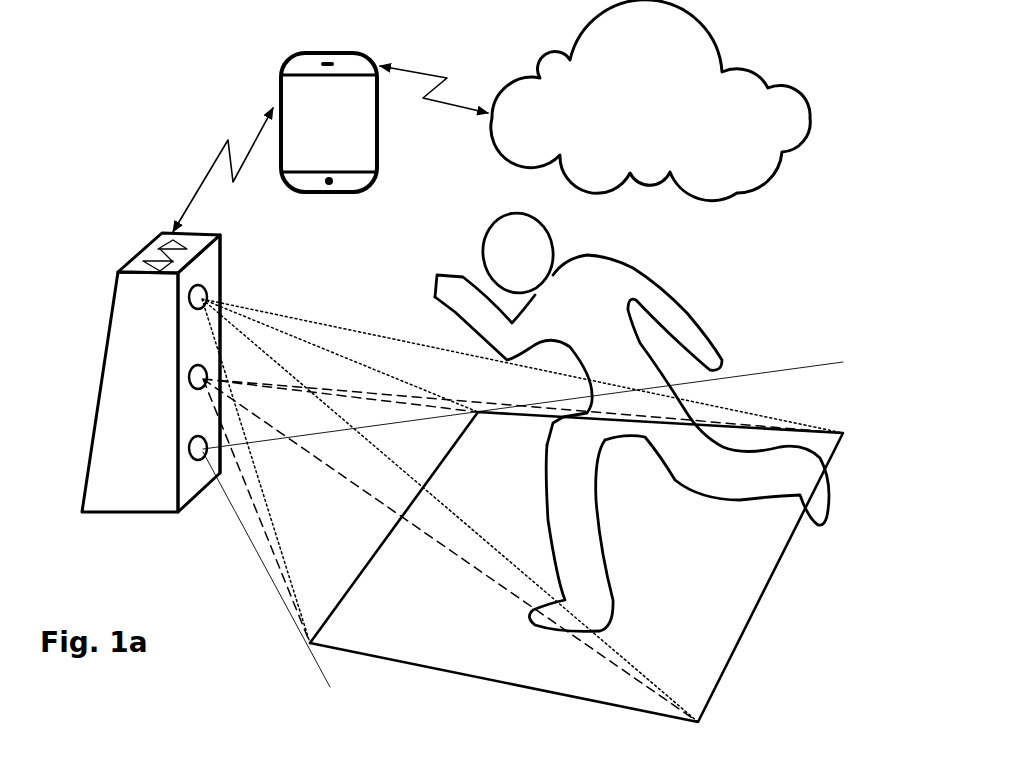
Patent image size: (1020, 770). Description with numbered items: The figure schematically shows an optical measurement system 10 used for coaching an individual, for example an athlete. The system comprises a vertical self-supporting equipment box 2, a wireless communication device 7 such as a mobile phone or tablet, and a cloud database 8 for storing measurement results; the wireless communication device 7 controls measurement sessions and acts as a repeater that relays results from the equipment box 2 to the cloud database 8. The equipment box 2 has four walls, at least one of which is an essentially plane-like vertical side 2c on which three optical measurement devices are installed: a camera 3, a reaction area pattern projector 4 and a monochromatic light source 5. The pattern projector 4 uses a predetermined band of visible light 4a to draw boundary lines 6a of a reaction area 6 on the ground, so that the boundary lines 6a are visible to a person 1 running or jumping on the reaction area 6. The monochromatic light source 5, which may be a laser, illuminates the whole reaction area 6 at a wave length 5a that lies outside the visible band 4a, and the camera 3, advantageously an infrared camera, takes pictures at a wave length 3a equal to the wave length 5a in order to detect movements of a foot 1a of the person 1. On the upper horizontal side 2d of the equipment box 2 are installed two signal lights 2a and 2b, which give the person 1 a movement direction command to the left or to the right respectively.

The optical measurement system 10 is at (194, 140).
The self-supporting equipment box 2 is at (155, 324).
The signal light 2a is at (130, 261).
The signal light 2b is at (172, 238).
The vertical side 2c is at (210, 277).
The upper horizontal side 2d is at (221, 238).
The camera 3 is at (189, 302).
The reaction area pattern projector 4 is at (189, 380).
The monochromatic light source 5 is at (189, 452).
The wave length 3a is at (336, 318).
The predetermined band of visible light 4a is at (365, 494).
The wave length 5a is at (328, 687).
The reaction area 6 is at (580, 583).
The boundary lines 6a is at (530, 421).
The person 1 is at (632, 420).
The foot 1a is at (606, 606).
The wireless communication device 7 is at (290, 105).
The cloud database 8 is at (793, 128).